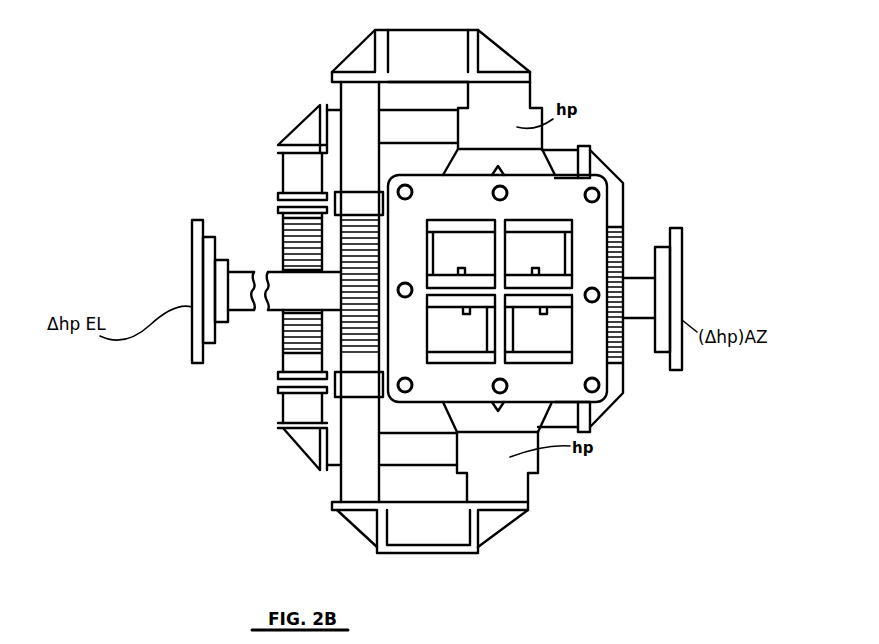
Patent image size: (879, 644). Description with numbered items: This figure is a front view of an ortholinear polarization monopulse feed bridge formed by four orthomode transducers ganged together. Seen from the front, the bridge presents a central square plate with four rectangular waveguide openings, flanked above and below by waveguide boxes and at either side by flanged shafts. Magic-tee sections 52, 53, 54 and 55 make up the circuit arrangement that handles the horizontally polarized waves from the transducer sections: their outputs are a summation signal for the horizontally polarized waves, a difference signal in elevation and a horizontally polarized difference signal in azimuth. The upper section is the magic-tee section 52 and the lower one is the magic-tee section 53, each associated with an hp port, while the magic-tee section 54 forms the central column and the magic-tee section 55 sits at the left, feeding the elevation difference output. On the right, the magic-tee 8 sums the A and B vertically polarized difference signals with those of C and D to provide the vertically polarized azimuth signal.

The magic-tee section 52 is at (502, 100).
The magic-tee section 53 is at (493, 483).
The magic-tee section 54 is at (352, 302).
The magic-tee section 55 is at (308, 233).
The magic-tee 8 is at (623, 318).